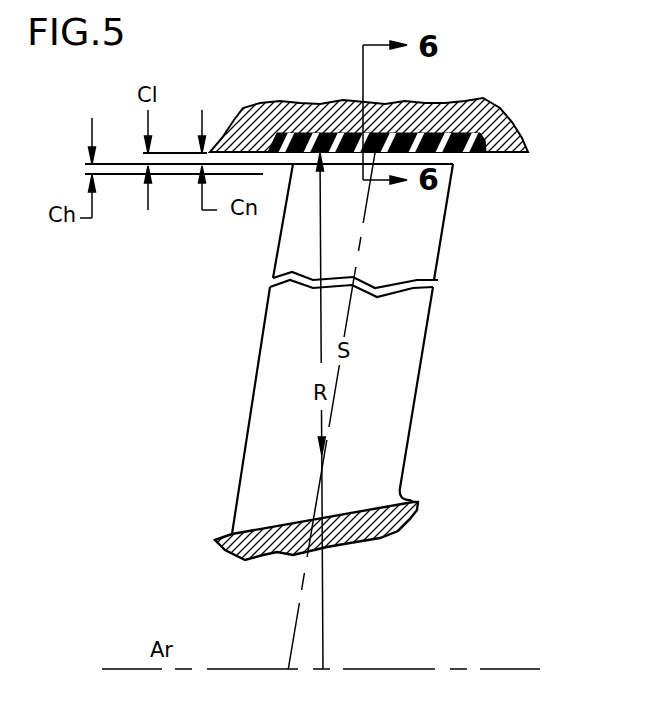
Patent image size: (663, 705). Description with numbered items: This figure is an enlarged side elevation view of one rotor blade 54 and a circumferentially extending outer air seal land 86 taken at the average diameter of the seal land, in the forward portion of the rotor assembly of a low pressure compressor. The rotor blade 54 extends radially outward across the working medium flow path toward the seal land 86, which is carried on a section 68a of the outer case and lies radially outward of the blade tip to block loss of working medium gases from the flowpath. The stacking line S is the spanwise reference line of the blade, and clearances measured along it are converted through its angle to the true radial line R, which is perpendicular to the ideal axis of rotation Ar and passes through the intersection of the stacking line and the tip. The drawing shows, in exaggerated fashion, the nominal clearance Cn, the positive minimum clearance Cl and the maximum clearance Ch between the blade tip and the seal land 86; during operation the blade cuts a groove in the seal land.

The rotor blade 54 is at (303, 413).
The outer air seal land 86 is at (463, 152).
The outer case section 68a is at (497, 120).